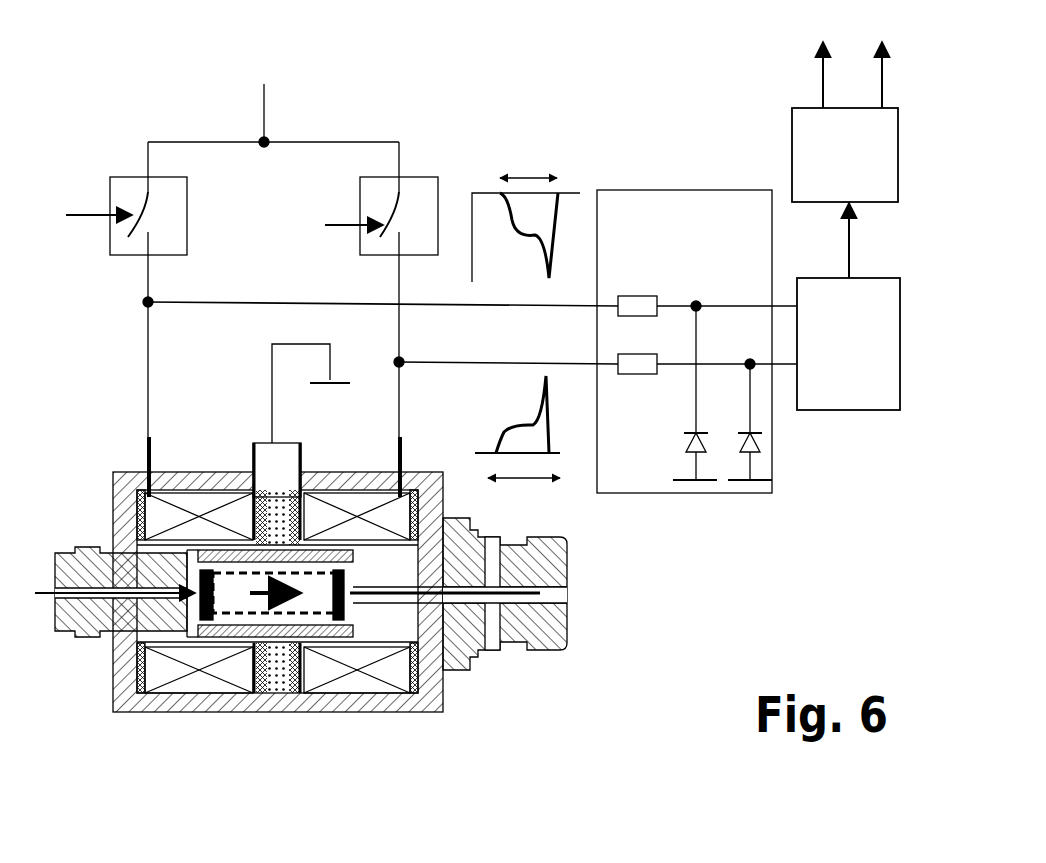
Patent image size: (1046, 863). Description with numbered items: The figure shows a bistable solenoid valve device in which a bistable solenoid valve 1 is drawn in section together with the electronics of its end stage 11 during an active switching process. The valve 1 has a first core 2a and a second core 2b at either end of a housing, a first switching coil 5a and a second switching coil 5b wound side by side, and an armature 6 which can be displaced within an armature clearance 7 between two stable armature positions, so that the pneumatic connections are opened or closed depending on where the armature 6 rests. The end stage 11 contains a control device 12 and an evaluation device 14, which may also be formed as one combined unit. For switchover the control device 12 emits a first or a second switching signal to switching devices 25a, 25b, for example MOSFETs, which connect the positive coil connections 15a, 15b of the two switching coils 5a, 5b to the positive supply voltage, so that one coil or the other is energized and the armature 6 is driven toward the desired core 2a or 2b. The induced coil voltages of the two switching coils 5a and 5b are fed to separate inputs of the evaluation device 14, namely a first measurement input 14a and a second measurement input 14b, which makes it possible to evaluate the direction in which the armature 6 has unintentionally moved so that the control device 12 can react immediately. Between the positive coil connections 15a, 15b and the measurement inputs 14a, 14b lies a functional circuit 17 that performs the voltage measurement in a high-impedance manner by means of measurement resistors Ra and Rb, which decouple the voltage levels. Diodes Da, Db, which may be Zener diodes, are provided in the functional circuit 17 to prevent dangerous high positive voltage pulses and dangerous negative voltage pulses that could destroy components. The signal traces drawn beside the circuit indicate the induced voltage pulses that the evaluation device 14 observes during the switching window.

The bistable solenoid valve 1 is at (651, 708).
The first core 2a is at (75, 640).
The second core 2b is at (548, 652).
The first switching coil 5a is at (200, 678).
The second switching coil 5b is at (355, 678).
The armature 6 is at (307, 648).
The armature clearance 7 is at (568, 578).
The end stage 11 is at (756, 571).
The control device 12 is at (790, 124).
The evaluation device 14 is at (878, 410).
The first measurement input 14a is at (832, 310).
The second measurement input 14b is at (832, 370).
The positive coil connection 15a is at (154, 456).
The positive coil connection 15b is at (398, 466).
The functional circuit 17 is at (624, 190).
The switching device 25a is at (110, 177).
The switching device 25b is at (428, 177).
The measurement resistor Ra is at (632, 296).
The measurement resistor Rb is at (644, 375).
The diode Da is at (686, 446).
The diode Db is at (760, 445).